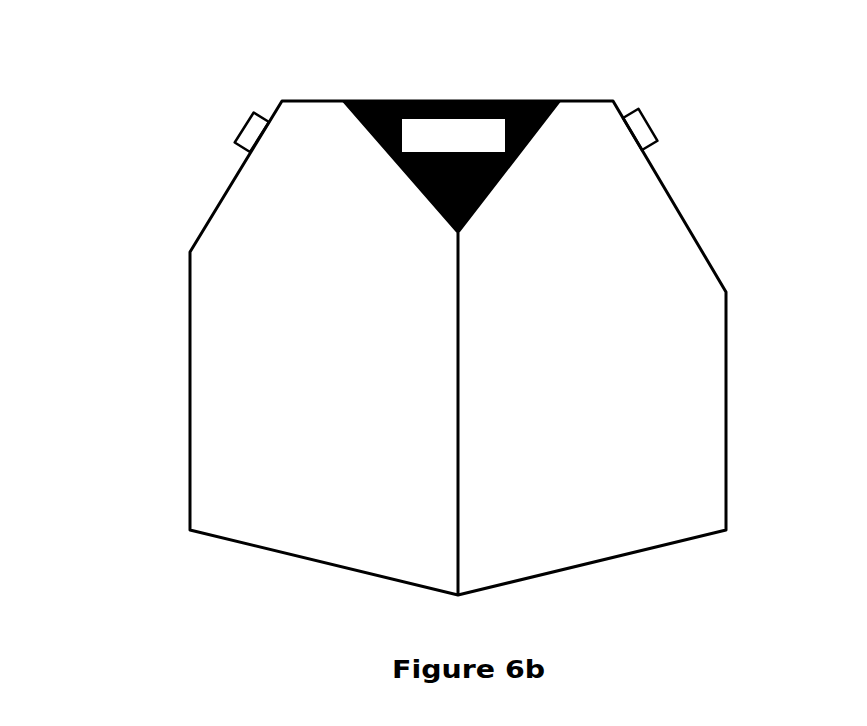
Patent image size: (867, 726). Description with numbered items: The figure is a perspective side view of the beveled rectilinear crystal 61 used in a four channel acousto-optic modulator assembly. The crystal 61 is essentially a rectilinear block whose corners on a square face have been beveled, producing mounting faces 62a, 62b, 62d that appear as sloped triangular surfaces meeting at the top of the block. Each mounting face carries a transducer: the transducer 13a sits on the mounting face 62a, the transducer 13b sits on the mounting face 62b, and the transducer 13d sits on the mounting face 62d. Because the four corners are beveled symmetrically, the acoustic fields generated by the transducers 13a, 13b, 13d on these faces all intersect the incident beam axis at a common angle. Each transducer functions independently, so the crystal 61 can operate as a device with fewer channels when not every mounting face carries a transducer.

The beveled rectilinear crystal 61 is at (170, 444).
The mounting face 62a is at (381, 101).
The mounting face 62b is at (208, 213).
The mounting face 62d is at (688, 217).
The transducer 13a is at (476, 132).
The transducer 13b is at (250, 120).
The transducer 13d is at (652, 132).